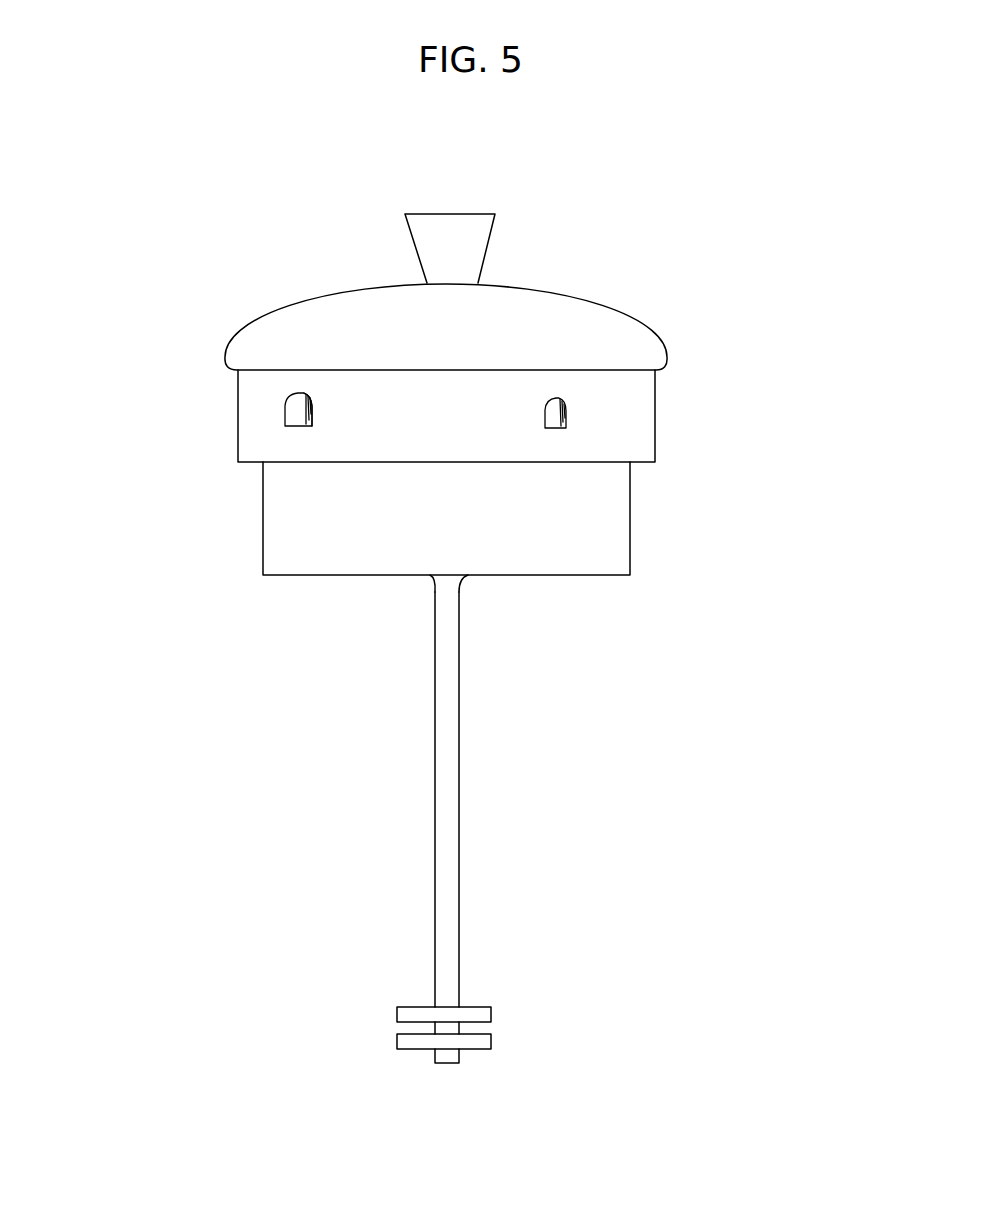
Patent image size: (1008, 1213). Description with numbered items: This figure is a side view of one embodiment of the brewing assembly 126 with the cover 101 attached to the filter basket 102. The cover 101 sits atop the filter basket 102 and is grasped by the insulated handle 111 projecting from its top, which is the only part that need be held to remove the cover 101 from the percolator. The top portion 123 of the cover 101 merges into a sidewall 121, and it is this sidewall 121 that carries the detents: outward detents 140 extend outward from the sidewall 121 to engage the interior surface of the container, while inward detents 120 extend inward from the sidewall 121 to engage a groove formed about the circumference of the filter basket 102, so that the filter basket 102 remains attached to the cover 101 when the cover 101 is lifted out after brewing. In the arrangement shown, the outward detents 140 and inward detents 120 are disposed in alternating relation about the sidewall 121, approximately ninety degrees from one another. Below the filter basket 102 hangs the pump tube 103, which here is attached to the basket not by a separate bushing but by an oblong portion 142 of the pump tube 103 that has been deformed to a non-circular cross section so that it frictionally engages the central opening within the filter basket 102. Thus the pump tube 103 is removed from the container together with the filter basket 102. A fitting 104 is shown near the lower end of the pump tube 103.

The brewing assembly 126 is at (182, 600).
The cover 101 is at (307, 300).
The insulated handle 111 is at (478, 237).
The dome top of cap 123 is at (573, 303).
The sidewall 121 is at (652, 417).
The outward detents 140 is at (293, 412).
The inward detents 120 is at (553, 422).
The filter basket 102 is at (592, 550).
The oblong portion 142 is at (432, 588).
The pump tube 103 is at (459, 816).
The nuts 104 is at (407, 1017).